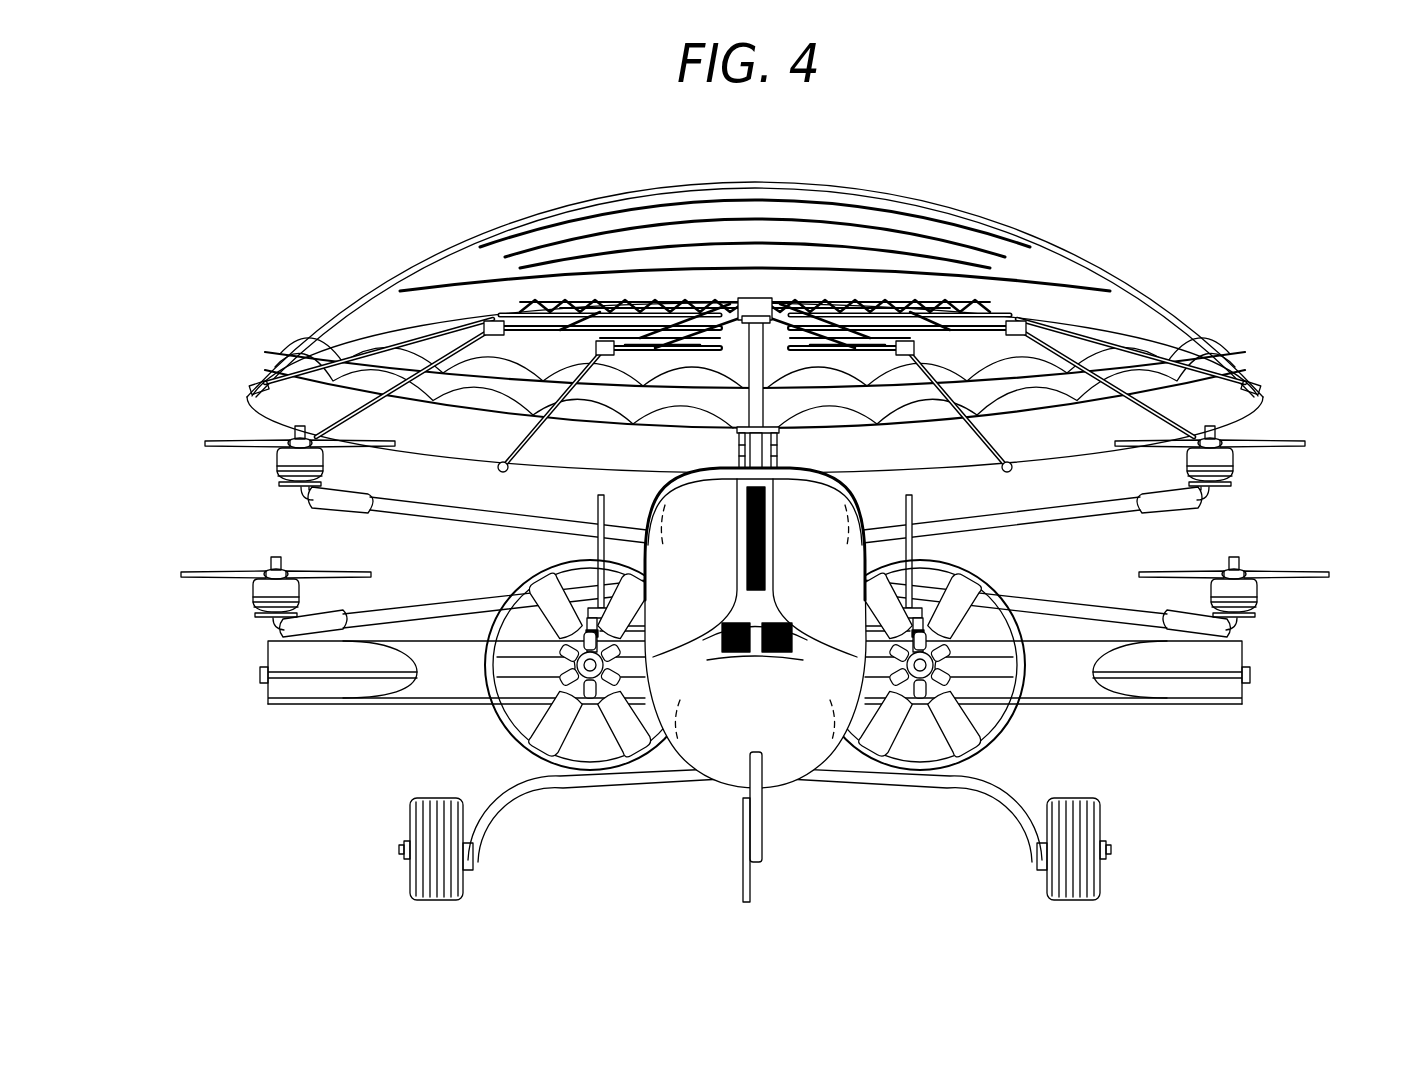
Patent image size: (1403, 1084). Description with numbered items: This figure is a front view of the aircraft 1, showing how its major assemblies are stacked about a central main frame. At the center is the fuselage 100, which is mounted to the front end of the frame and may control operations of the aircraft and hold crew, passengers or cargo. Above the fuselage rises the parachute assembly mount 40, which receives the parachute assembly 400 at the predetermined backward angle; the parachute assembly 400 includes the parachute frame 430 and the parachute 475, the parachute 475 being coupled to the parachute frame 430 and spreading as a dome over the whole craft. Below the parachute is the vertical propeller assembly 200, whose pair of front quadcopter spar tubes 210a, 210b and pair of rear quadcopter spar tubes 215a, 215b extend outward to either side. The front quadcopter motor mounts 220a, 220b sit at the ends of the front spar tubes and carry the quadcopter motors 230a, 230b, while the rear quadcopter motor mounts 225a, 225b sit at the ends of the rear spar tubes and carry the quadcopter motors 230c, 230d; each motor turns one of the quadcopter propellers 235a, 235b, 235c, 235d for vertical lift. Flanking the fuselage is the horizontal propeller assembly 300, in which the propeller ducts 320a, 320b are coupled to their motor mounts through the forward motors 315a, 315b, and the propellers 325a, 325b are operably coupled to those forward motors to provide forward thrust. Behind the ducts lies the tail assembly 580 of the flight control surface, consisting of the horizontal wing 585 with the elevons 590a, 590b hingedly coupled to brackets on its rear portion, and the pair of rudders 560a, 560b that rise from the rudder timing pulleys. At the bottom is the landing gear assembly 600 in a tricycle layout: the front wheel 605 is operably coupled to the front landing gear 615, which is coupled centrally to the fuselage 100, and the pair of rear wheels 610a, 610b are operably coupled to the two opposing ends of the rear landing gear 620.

The aircraft 1 is at (1254, 159).
The parachute assembly mount 40 is at (814, 450).
The fuselage 100 is at (780, 777).
The vertical propeller assembly 200 is at (730, 528).
The front quadcopter spar tube 210a is at (433, 512).
The front quadcopter spar tube 210b is at (1062, 513).
The rear quadcopter spar tube 215a is at (462, 598).
The rear quadcopter spar tube 215b is at (1065, 600).
The front quadcopter motor mount 220a is at (308, 490).
The front quadcopter motor mount 220b is at (1205, 488).
The rear quadcopter motor mount 225a is at (287, 627).
The rear quadcopter motor mount 225b is at (1233, 627).
The quadcopter motor 230a is at (285, 459).
The quadcopter motor 230b is at (257, 592).
The quadcopter motor 230c is at (1250, 593).
The quadcopter motor 230d is at (1227, 458).
The quadcopter propeller 235a is at (238, 438).
The quadcopter propeller 235b is at (228, 577).
The quadcopter propeller 235c is at (1280, 575).
The quadcopter propeller 235d is at (1267, 437).
The horizontal propeller assembly 300 is at (724, 666).
The forward motor 315a is at (517, 717).
The forward motor 315b is at (988, 722).
The propeller duct 320a is at (520, 738).
The propeller duct 320b is at (990, 740).
The propeller 325a is at (547, 593).
The propeller 325b is at (960, 592).
The parachute assembly 400 is at (755, 327).
The parachute frame 430 is at (955, 352).
The parachute 475 is at (547, 220).
The rudder 560a is at (598, 512).
The rudder 560b is at (912, 510).
The tail assembly 580 is at (795, 688).
The horizontal wing 585 is at (1237, 647).
The elevon 590a is at (277, 703).
The elevon 590b is at (1238, 702).
The landing gear assembly 600 is at (751, 864).
The front wheel 605 is at (747, 883).
The rear wheel 610a is at (415, 810).
The rear wheel 610b is at (1095, 810).
The front landing gear 615 is at (757, 833).
The rear landing gear 620 is at (998, 795).